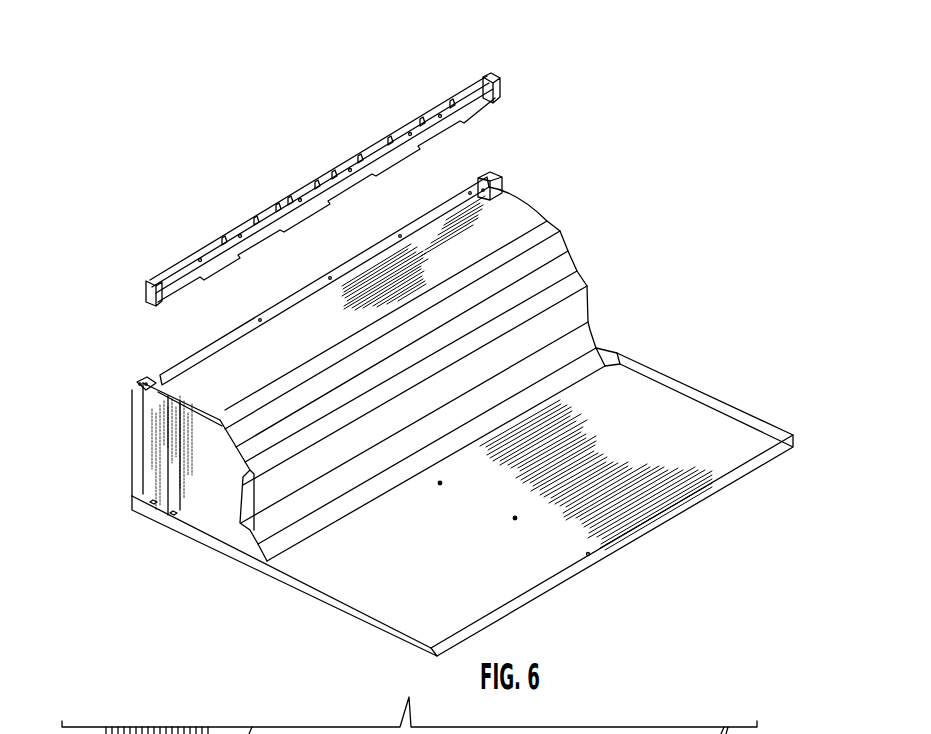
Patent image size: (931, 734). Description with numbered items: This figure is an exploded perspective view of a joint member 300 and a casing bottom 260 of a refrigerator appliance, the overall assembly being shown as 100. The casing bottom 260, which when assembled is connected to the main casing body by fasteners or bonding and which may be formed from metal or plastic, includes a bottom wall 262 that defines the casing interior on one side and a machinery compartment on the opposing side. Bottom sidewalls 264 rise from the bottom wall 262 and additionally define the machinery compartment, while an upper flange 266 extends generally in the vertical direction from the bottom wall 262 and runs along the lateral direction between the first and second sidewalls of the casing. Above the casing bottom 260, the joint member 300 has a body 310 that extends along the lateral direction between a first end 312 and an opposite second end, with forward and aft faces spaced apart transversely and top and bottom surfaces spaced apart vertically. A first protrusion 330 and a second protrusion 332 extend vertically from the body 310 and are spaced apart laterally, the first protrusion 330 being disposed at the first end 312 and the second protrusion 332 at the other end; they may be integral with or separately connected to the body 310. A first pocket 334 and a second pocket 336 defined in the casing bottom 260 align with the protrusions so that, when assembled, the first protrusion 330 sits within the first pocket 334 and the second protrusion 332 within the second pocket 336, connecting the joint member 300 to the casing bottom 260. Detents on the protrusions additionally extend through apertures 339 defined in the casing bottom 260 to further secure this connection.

The vehicle storage assembly 100 is at (586, 60).
The casing bottom 260 is at (685, 347).
The bottom wall 262 is at (680, 420).
The bottom sidewalls 264 is at (202, 498).
The upper flange 266 is at (240, 334).
The joint member 300 is at (362, 104).
The body 310 is at (413, 122).
The first end 312 is at (481, 70).
The first protrusion 330 is at (505, 99).
The second protrusion 332 is at (131, 300).
The first pocket 334 is at (502, 183).
The second pocket 336 is at (149, 371).
The apertures 339 is at (137, 378).